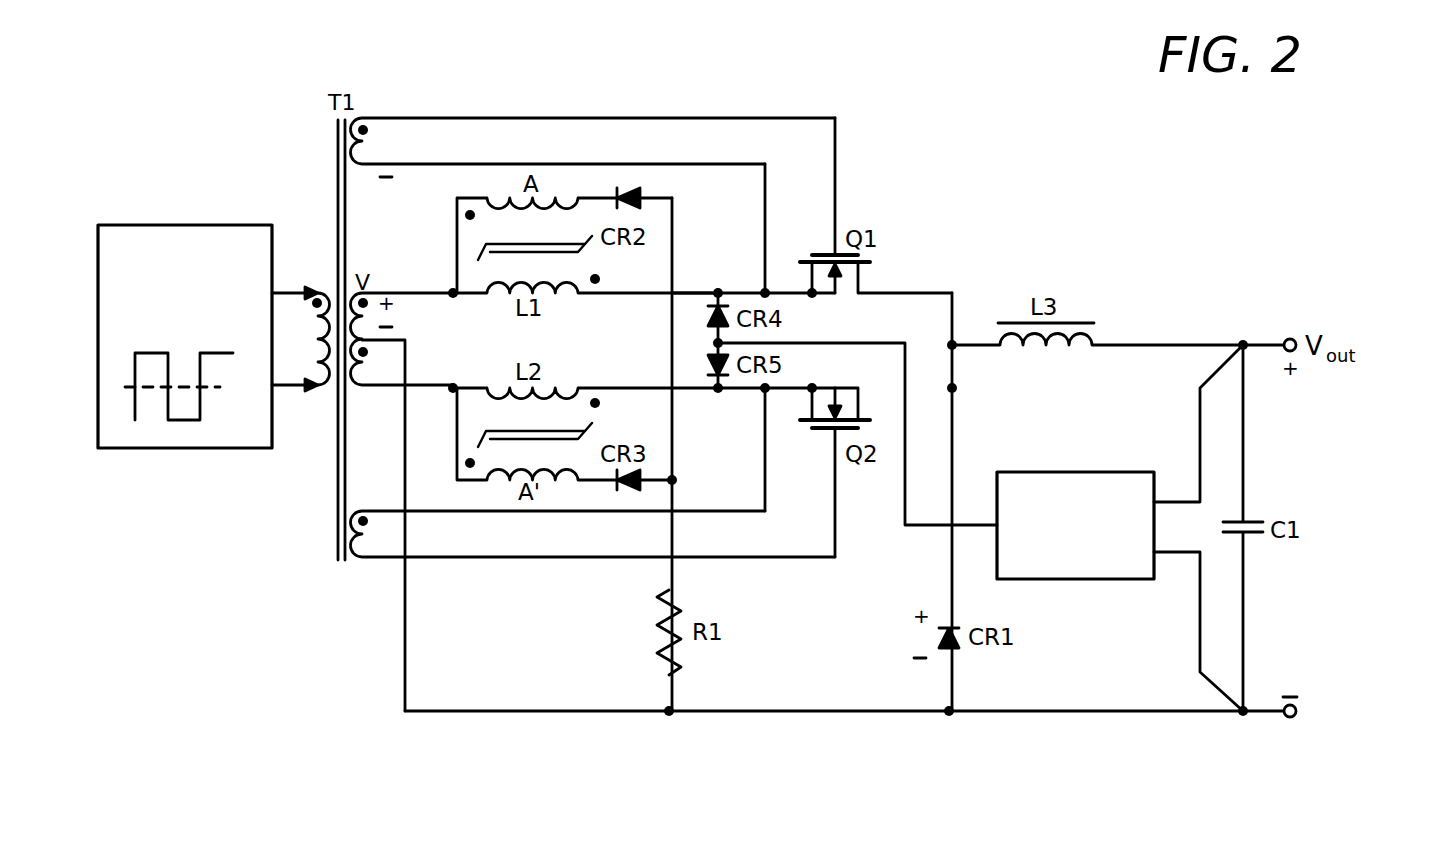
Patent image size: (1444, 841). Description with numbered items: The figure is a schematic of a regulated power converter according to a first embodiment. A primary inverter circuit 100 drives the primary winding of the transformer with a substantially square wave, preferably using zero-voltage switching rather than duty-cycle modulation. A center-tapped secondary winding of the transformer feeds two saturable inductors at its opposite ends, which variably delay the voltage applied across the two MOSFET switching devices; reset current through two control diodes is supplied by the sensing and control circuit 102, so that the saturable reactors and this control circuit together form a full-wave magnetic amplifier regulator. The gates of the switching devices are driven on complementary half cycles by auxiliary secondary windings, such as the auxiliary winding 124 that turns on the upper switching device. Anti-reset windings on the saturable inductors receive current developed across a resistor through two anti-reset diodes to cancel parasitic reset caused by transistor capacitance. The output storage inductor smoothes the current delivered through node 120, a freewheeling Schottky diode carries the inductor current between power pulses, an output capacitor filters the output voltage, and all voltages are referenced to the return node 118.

The primary inverter circuit 100 is at (150, 225).
The auxiliary winding 124 is at (370, 116).
The node 120 is at (688, 293).
The sensing and control circuit 102 is at (1077, 579).
The return node 118 is at (1035, 711).